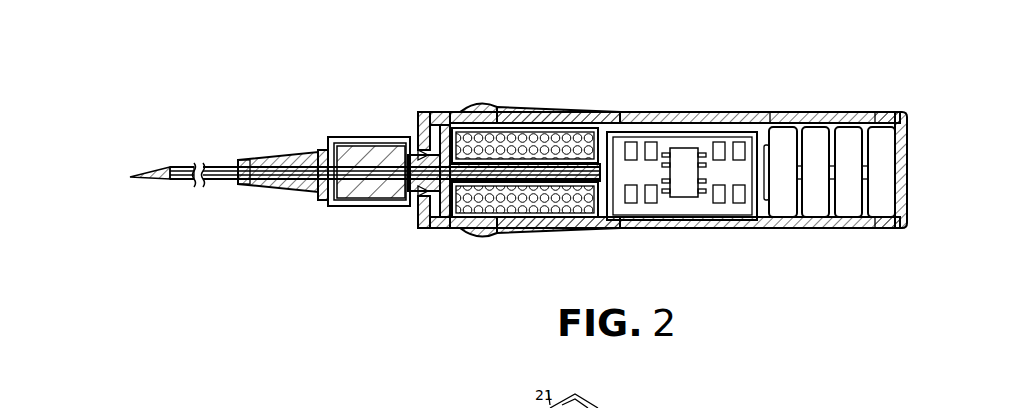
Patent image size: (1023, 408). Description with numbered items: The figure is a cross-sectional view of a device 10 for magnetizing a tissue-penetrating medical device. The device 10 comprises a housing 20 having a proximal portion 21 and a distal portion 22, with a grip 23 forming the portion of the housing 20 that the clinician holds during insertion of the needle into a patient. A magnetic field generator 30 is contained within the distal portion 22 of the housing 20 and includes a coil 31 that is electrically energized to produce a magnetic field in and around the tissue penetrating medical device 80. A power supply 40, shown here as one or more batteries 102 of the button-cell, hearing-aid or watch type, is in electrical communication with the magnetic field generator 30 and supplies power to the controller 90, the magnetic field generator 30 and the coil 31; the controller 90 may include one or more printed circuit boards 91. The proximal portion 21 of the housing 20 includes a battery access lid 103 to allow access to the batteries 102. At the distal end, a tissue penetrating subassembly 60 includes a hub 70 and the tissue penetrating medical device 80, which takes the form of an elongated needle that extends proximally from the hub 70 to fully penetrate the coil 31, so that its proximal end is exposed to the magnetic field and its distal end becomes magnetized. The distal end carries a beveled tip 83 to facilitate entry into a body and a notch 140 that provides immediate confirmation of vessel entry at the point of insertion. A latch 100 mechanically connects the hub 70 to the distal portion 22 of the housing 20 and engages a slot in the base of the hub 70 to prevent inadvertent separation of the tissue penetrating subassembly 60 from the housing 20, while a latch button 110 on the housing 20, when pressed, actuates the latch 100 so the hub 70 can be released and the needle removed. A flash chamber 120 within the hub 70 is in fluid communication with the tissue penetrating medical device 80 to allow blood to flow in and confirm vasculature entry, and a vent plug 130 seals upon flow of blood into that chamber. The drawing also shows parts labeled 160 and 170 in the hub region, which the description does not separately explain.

The device 10 is at (825, 60).
The housing 20 is at (797, 113).
The proximal portion 21 is at (868, 113).
The distal portion 22 is at (520, 109).
The grip 23 is at (633, 113).
The magnetic field generator 30 is at (566, 143).
The coil 31 is at (555, 214).
The power supply 40 is at (763, 212).
The tissue penetrating subassembly 60 is at (283, 194).
The hub 70 is at (252, 160).
The tissue penetrating medical device 80 is at (172, 185).
The beveled tip 83 is at (160, 175).
The controller 90 is at (668, 206).
The printed circuit board 91 is at (690, 158).
The latch 100 is at (425, 112).
The batteries 102 is at (816, 214).
The battery access lid 103 is at (910, 181).
The latch button 110 is at (482, 240).
The flash chamber 120 is at (358, 142).
The vent plug 130 is at (375, 172).
The notch 140 is at (170, 165).
The flange 160 is at (348, 200).
The connector 170 is at (420, 192).